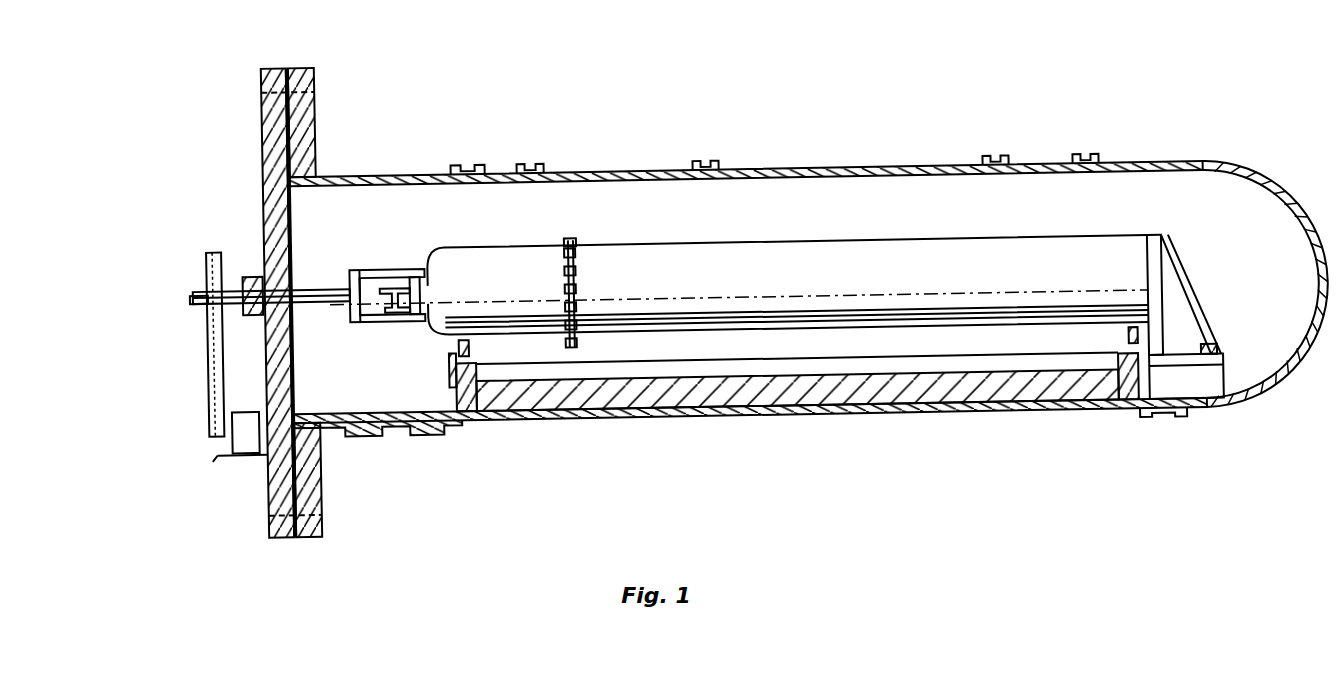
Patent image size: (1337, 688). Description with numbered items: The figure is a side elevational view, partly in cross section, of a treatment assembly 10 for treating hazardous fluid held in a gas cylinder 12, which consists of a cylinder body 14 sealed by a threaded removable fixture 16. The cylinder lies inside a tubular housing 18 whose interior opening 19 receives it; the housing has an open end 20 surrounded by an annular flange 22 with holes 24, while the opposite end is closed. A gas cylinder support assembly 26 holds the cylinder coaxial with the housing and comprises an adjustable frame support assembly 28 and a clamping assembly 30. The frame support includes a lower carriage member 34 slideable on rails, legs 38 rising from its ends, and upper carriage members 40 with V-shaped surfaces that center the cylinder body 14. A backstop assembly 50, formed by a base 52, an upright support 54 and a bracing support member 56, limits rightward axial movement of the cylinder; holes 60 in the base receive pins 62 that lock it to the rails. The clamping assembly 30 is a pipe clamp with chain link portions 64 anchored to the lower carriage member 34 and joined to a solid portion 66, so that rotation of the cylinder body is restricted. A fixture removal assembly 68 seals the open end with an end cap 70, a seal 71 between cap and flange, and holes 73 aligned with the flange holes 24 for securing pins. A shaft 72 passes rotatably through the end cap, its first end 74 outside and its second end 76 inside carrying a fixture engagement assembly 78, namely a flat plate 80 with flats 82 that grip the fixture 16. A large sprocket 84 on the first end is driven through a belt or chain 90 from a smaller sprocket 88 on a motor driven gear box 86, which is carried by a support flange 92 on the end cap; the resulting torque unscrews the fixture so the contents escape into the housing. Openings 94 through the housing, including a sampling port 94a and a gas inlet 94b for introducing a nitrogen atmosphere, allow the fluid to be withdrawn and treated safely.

The treatment assembly 10 is at (840, 150).
The gas cylinder 12 is at (1096, 239).
The cylinder body 14 is at (791, 243).
The removable fixture 16 is at (410, 277).
The tubular housing 18 is at (1257, 190).
The opening 19 is at (767, 184).
The open end 20 is at (322, 170).
The annular flange 22 is at (311, 105).
The holes 24 is at (319, 73).
The gas cylinder support assembly 26 is at (455, 423).
The adjustable frame support assembly 28 is at (1116, 406).
The clamping assembly 30 is at (590, 278).
The lower carriage member 34 is at (468, 403).
The legs 38 is at (449, 364).
The upper carriage members 40 is at (454, 341).
The backstop assembly 50 is at (1186, 271).
The base 52 is at (1191, 371).
The upright support 54 is at (1158, 241).
The support member 56 is at (1185, 304).
The holes 60 is at (1222, 376).
The pins 62 is at (1209, 361).
The chain link portions 64 is at (546, 282).
The solid portion 66 is at (576, 240).
The fixture removal assembly 68 is at (251, 269).
The end cap 70 is at (271, 529).
The seal 71 is at (296, 530).
The shaft 72 is at (308, 301).
The holes 73 is at (294, 85).
The first end 74 is at (232, 295).
The second end 76 is at (357, 262).
The fixture engagement assembly 78 is at (407, 264).
The flat plate 80 is at (362, 292).
The flats 82 is at (418, 274).
The pulley or sprocket 84 is at (210, 272).
The motor driven gear box assembly 86 is at (225, 442).
The smaller pulley or sprocket 88 is at (210, 409).
The belt or chain 90 is at (211, 359).
The support flange 92 is at (1021, 156).
The openings 94 is at (715, 162).
The sampling port 94a is at (1087, 169).
The gas inlet 94b is at (539, 161).